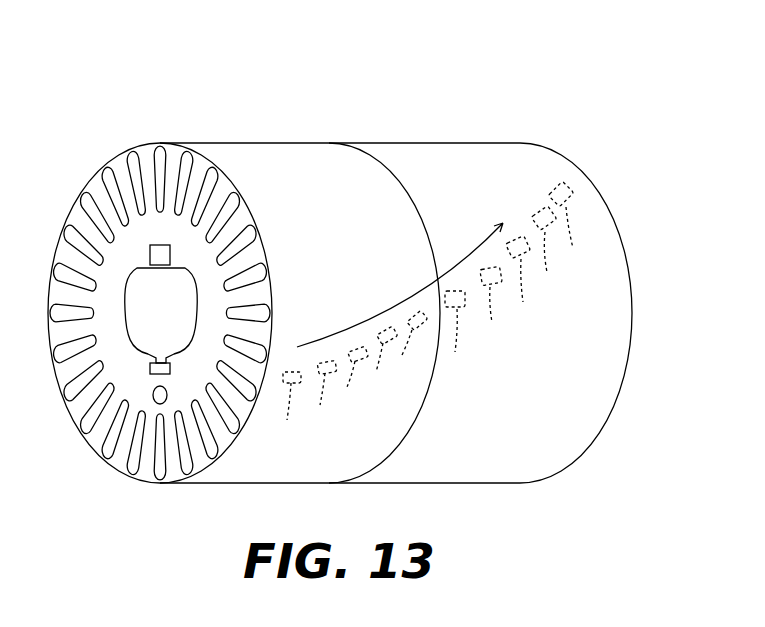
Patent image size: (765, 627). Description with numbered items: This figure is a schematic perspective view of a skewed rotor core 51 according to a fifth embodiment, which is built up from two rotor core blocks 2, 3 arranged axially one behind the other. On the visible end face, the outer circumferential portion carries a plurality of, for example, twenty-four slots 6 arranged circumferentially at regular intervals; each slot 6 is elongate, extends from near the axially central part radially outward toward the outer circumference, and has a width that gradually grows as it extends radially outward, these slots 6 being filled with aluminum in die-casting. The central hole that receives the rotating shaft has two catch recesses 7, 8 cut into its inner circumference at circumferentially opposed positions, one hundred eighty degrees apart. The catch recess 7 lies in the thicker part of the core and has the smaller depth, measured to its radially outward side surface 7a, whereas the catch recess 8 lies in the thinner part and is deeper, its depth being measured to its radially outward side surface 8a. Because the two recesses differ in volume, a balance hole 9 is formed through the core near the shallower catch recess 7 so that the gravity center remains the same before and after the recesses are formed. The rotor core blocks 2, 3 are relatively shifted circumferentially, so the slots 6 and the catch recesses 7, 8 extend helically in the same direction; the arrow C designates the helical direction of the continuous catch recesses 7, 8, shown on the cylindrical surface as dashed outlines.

The rotor core 51 is at (569, 70).
The rotor core block 2 is at (296, 136).
The rotor core block 3 is at (439, 136).
The slots 6 is at (135, 160).
The catch recess 7 is at (143, 355).
The side surface 7a is at (185, 353).
The catch recess 8 is at (162, 265).
The side surface 8a is at (152, 255).
The balance hole 9 is at (153, 395).
The arrow C is at (400, 285).